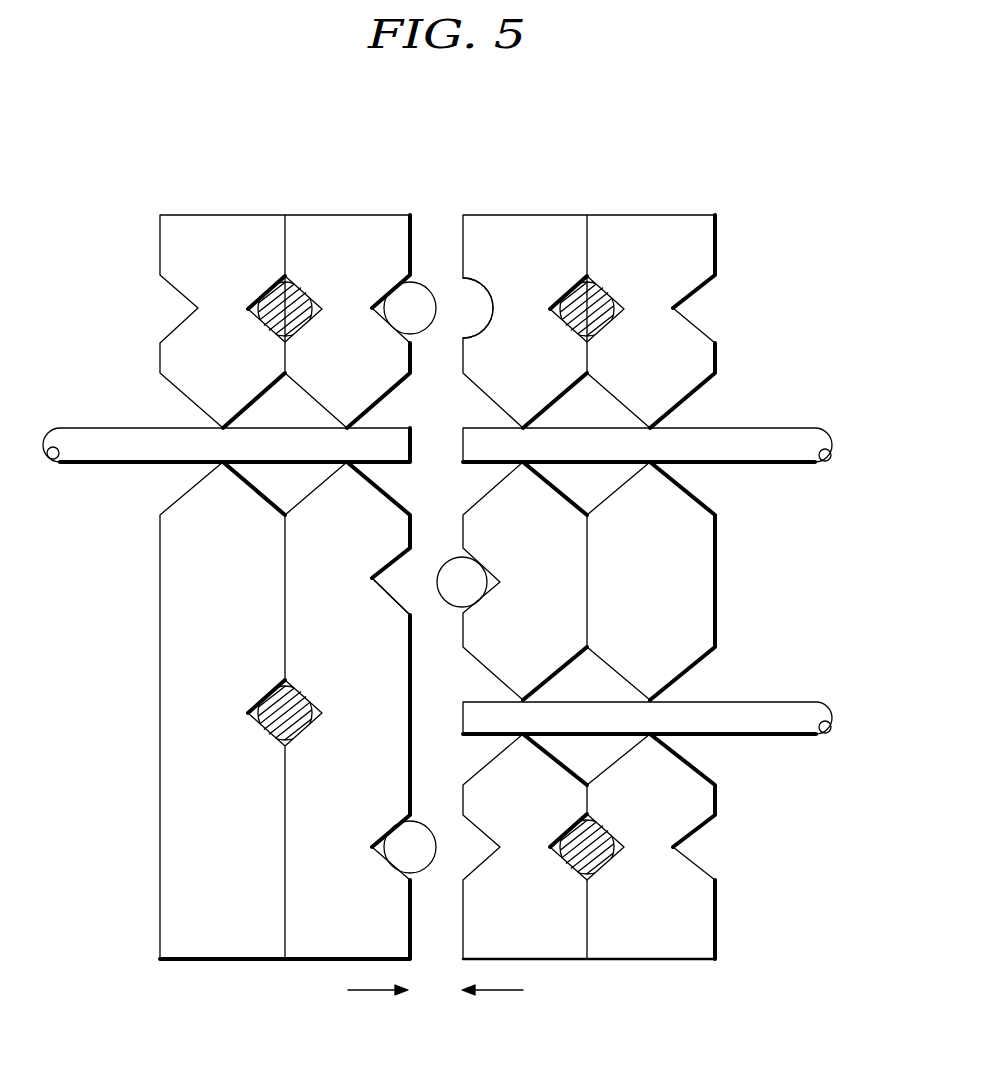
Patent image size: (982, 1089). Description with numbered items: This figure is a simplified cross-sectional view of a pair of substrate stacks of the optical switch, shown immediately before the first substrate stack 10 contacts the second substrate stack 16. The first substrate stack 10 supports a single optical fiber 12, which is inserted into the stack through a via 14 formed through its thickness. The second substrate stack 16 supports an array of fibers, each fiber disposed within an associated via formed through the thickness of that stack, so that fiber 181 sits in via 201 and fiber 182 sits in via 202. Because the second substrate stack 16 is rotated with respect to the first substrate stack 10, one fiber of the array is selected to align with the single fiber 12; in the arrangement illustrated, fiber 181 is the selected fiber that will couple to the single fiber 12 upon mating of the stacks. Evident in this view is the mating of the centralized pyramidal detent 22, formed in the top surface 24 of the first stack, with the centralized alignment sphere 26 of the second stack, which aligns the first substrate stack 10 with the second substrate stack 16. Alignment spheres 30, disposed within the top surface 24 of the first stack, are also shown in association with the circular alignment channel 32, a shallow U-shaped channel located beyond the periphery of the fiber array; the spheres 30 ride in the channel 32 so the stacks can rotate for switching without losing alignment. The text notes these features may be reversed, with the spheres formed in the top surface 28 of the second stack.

The first substrate stack 10 is at (210, 945).
The single optical fiber 12 is at (90, 437).
The via 14 is at (182, 485).
The second substrate stack 16 is at (683, 945).
The fiber 181 is at (810, 447).
The fiber 182 is at (793, 720).
The via 201 is at (693, 398).
The via 202 is at (693, 678).
The pyramidal detent 22 is at (388, 598).
The top surface 24 is at (413, 920).
The alignment sphere 26 is at (462, 585).
The top surface 28 is at (458, 245).
The alignment sphere 30 is at (420, 300).
The alignment channel 32 is at (492, 300).